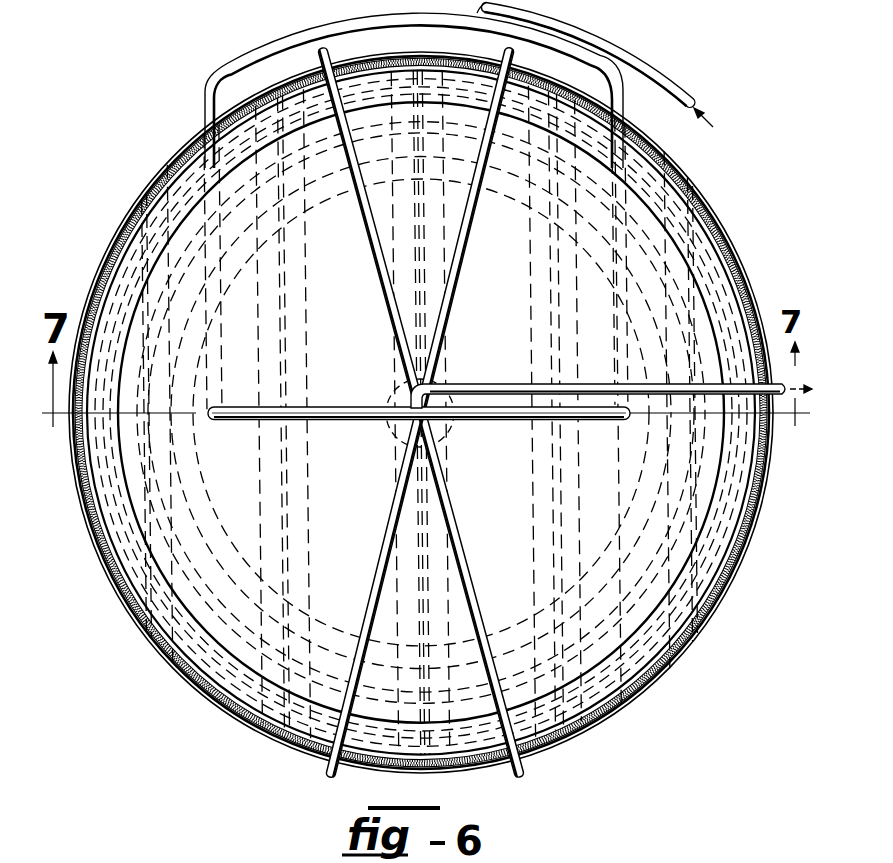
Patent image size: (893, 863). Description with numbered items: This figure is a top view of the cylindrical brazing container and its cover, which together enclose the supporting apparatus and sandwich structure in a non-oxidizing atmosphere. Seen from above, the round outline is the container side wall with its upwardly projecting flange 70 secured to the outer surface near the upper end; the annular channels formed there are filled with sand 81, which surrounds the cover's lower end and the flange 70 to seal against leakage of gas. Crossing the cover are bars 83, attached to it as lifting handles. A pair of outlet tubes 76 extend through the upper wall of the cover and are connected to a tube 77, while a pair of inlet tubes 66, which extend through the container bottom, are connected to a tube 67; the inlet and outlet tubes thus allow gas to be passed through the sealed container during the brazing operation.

The inlet tubes 66 is at (205, 108).
The tube 67 is at (645, 63).
The flange 70 is at (744, 262).
The sand 81 is at (755, 278).
The bars 83 is at (328, 47).
The outlet tubes 76 is at (249, 422).
The tube 77 is at (598, 384).